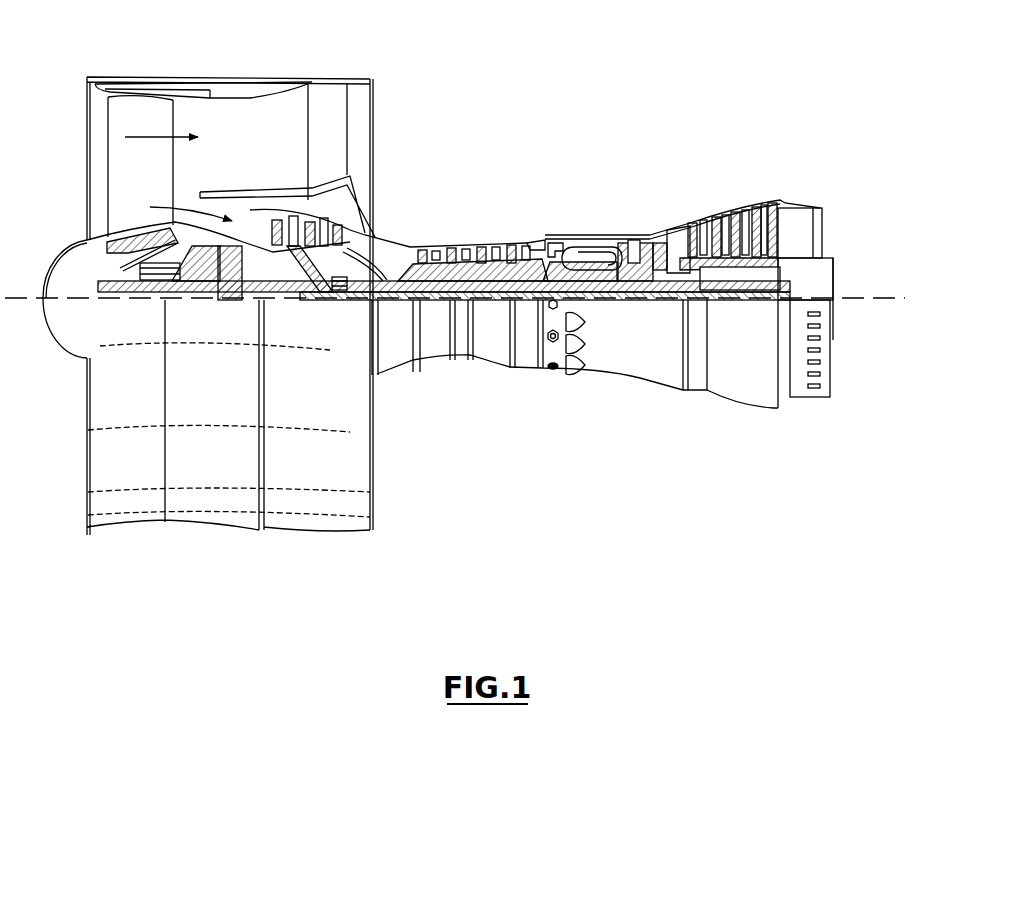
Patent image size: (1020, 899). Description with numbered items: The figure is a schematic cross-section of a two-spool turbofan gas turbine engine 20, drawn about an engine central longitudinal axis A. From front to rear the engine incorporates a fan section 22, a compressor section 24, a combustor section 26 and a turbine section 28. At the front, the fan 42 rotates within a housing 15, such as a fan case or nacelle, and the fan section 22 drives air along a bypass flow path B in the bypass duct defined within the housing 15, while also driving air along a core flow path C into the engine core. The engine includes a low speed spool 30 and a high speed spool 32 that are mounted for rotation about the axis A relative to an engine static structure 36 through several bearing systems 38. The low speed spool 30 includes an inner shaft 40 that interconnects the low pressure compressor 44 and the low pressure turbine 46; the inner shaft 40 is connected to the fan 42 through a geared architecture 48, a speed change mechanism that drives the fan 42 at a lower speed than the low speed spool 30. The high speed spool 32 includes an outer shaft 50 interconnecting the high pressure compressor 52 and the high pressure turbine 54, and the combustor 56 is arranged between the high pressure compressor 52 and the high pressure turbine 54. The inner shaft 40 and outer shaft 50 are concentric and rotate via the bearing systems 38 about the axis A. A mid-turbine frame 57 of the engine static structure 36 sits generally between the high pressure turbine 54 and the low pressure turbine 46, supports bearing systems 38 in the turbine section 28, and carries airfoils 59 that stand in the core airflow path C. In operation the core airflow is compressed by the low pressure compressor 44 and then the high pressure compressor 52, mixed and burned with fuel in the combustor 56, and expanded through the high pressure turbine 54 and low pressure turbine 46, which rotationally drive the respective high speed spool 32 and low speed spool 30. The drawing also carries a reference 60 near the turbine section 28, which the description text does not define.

The housing 15 is at (228, 80).
The gas turbine engine 20 is at (590, 118).
The fan section 22 is at (177, 72).
The compressor section 24 is at (405, 222).
The combustor section 26 is at (585, 222).
The turbine section 28 is at (708, 182).
The low speed spool 30 is at (493, 305).
The high speed spool 32 is at (530, 242).
The engine static structure 36 is at (525, 370).
The bearing systems 38 is at (340, 292).
The inner shaft 40 is at (385, 303).
The fan 42 is at (128, 179).
The low pressure compressor 44 is at (310, 227).
The low pressure turbine 46 is at (733, 207).
The geared architecture 48 is at (236, 292).
The outer shaft 50 is at (590, 300).
The high pressure compressor 52 is at (478, 245).
The high pressure turbine 54 is at (637, 237).
The combustor 56 is at (590, 245).
The mid-turbine frame 57 is at (672, 226).
The airfoils 59 is at (703, 278).
The turbine exhaust case 60 is at (690, 222).
The engine central longitudinal axis A is at (896, 298).
The bypass flow path B is at (150, 137).
The core flow path C is at (182, 208).